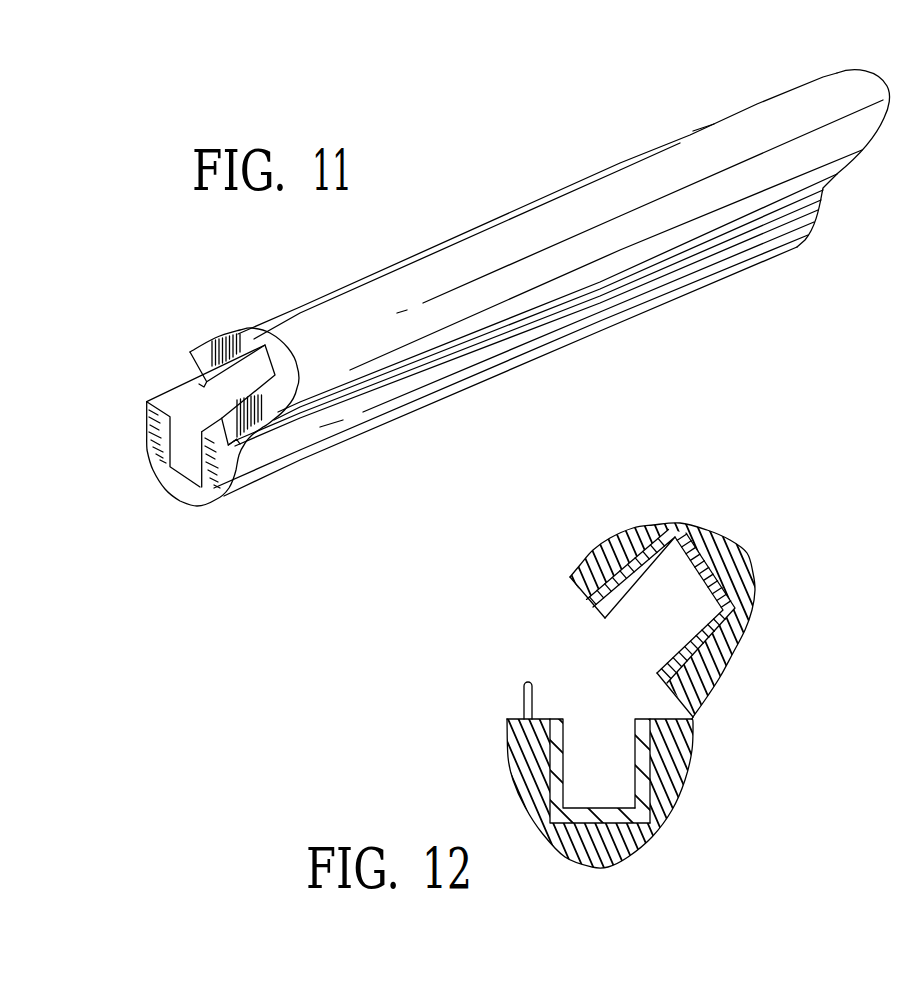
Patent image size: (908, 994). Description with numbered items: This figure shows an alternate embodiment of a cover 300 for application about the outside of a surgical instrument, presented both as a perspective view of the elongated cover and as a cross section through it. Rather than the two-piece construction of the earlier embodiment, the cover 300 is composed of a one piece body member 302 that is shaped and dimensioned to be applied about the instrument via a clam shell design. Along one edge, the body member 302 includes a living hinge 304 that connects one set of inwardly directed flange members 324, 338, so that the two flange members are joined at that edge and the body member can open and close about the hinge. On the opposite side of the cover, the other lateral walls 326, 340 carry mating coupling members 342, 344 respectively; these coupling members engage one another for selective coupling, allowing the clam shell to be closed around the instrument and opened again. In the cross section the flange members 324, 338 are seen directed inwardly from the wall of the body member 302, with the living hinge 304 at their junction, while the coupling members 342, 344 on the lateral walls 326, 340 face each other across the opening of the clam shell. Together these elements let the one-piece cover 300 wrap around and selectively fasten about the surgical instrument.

In FIG. 11, the cover 300 is at (457, 194).
In FIG. 12, the cover 300 is at (747, 510).
In FIG. 11, the one piece body member 302 is at (725, 193).
In FIG. 12, the one piece body member 302 is at (735, 665).
In FIG. 11, the living hinge 304 is at (240, 450).
In FIG. 12, the living hinge 304 is at (693, 721).
In FIG. 11, the inwardly directed flange member 324 is at (257, 410).
In FIG. 12, the inwardly directed flange member 324 is at (748, 628).
In FIG. 11, the lateral wall 326 is at (213, 350).
In FIG. 12, the lateral wall 326 is at (628, 545).
In FIG. 11, the inwardly directed flange member 338 is at (220, 497).
In FIG. 12, the inwardly directed flange member 338 is at (682, 782).
In FIG. 11, the lateral wall 340 is at (150, 430).
In FIG. 12, the lateral wall 340 is at (518, 765).
In FIG. 12, the mating coupling member 342 is at (590, 560).
In FIG. 12, the mating coupling member 344 is at (521, 693).